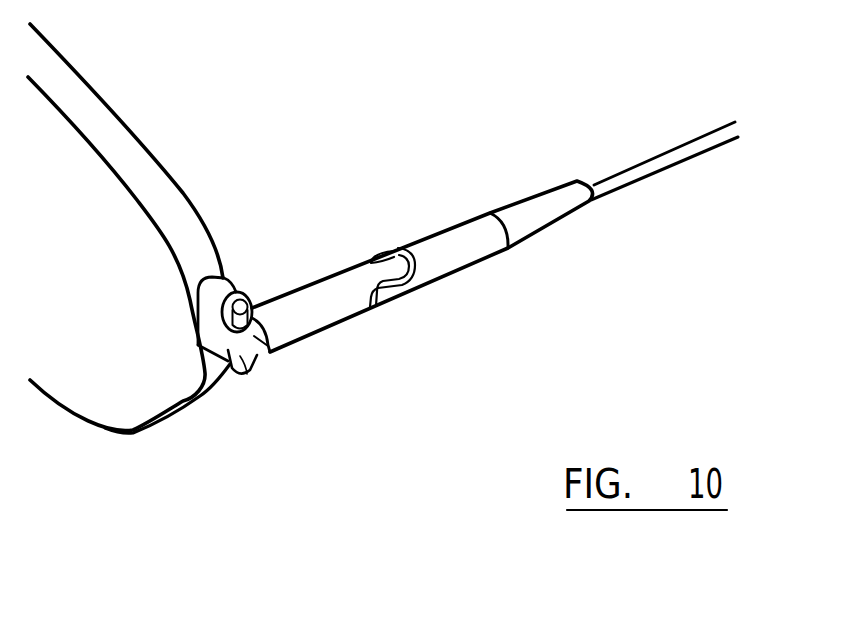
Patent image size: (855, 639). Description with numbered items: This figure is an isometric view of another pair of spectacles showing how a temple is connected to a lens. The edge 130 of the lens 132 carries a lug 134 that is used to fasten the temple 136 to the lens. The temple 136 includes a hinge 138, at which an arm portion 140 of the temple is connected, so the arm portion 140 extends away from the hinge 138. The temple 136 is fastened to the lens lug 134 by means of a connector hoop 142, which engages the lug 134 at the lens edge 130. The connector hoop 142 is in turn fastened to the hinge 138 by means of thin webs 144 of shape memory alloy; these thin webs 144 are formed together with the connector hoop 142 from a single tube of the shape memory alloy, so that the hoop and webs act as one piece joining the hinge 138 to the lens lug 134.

The edge 130 is at (135, 157).
The lens 132 is at (112, 297).
The lug 134 is at (240, 290).
The temple 136 is at (400, 328).
The hinge 138 is at (383, 254).
The arm portion 140 is at (660, 162).
The connector hoop 142 is at (242, 367).
The thin webs 144 is at (258, 352).